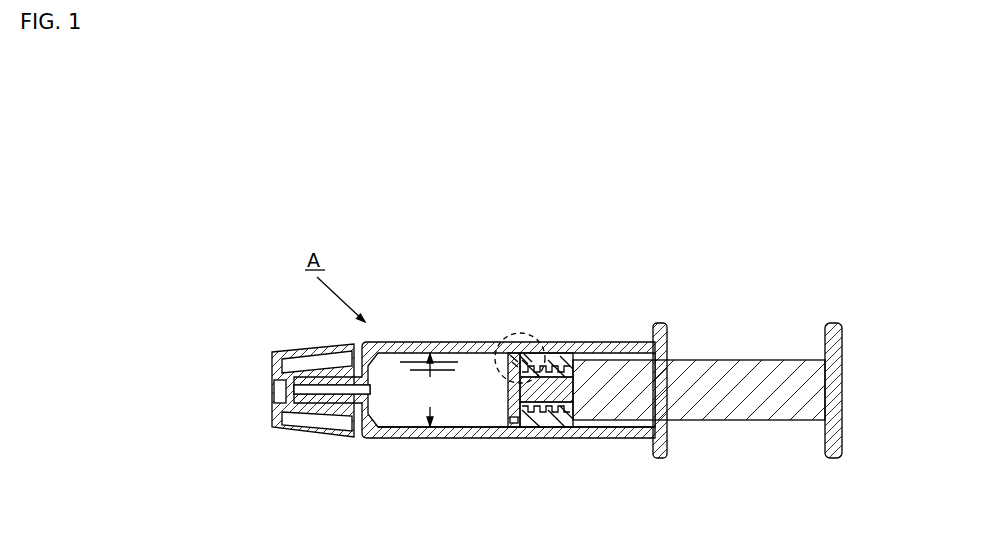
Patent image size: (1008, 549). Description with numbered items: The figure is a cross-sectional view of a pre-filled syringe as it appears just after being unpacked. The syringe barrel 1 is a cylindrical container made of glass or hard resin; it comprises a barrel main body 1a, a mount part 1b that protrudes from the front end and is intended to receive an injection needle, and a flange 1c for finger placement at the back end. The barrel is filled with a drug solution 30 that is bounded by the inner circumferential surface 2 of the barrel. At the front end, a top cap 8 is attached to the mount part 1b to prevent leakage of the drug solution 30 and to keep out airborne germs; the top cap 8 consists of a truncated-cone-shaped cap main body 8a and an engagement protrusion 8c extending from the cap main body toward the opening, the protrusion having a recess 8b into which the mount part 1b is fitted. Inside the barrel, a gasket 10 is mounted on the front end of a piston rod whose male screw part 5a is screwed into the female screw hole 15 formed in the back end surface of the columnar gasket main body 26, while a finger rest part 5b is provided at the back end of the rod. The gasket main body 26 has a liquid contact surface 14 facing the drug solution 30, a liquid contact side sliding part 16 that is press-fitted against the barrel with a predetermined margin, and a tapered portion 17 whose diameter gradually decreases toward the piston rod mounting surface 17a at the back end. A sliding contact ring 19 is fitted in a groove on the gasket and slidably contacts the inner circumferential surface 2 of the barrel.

The syringe barrel 1 is at (414, 443).
The barrel main body 1a is at (427, 436).
The mount part 1b is at (335, 437).
The flange 1c is at (662, 458).
The inner circumferential surface 2 is at (412, 358).
The drug solution 30 is at (464, 408).
The top cap 8 is at (266, 390).
The cap main body 8a is at (272, 422).
The recess 8b is at (322, 378).
The engagement protrusion 8c is at (293, 427).
The male screw part 5a is at (563, 387).
The finger rest part 5b is at (843, 427).
The liquid contact surface 14 is at (493, 428).
The female screw hole 15 is at (543, 428).
The liquid contact side sliding part 16 is at (517, 428).
The tapered portion 17 is at (560, 428).
The piston rod mounting surface 17a is at (585, 355).
The sliding contact ring 19 is at (524, 352).
The gasket main body 26 is at (511, 352).
The gasket 10 is at (550, 348).